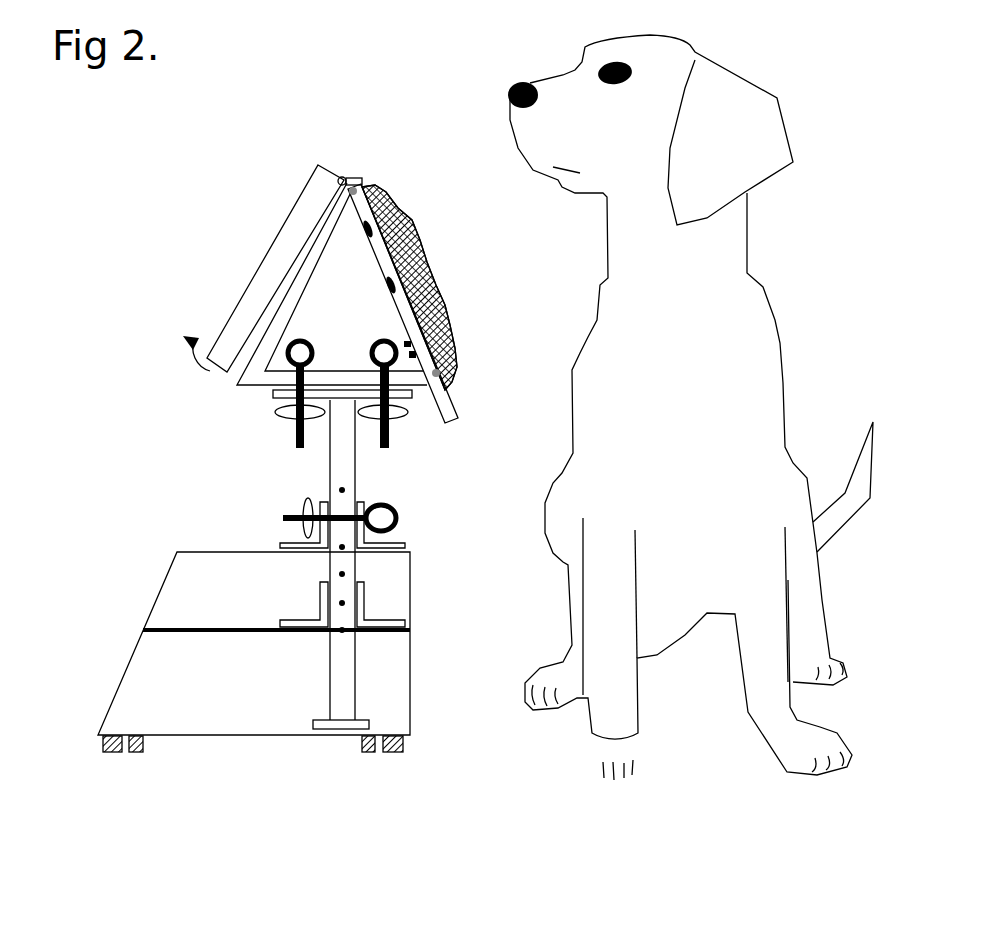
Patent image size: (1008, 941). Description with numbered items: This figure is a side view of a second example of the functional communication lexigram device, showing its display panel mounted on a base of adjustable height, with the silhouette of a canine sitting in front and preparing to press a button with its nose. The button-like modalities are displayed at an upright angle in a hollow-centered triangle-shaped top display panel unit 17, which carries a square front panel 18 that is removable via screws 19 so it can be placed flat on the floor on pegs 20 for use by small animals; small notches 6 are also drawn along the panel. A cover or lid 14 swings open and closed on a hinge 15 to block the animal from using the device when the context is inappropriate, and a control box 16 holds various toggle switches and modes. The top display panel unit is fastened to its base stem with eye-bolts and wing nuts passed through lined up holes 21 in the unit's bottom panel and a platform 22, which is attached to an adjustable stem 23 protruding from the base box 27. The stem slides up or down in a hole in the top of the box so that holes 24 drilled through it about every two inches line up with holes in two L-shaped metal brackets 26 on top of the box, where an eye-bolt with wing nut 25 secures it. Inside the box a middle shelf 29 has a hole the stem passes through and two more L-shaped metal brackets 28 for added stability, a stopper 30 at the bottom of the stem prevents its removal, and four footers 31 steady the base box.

The notch 6 is at (365, 233).
The cover or lid 14 is at (257, 272).
The hinge 15 is at (341, 174).
The control box 16 is at (460, 409).
The top display panel unit 17 is at (268, 353).
The square front panel 18 is at (420, 310).
The screws 19 is at (363, 183).
The pegs 20 is at (407, 346).
The lined up holes 21 is at (371, 353).
The platform 22 is at (271, 396).
The adjustable stem 23 is at (357, 459).
The holes 24 is at (347, 490).
The eye-bolt with wing nut 25 is at (399, 515).
The L-shaped metal brackets 26 is at (273, 543).
The base box 27 is at (412, 567).
The L-shaped metal brackets 28 is at (312, 607).
The middle shelf 29 is at (412, 632).
The stopper 30 is at (372, 725).
The footers 31 is at (393, 754).